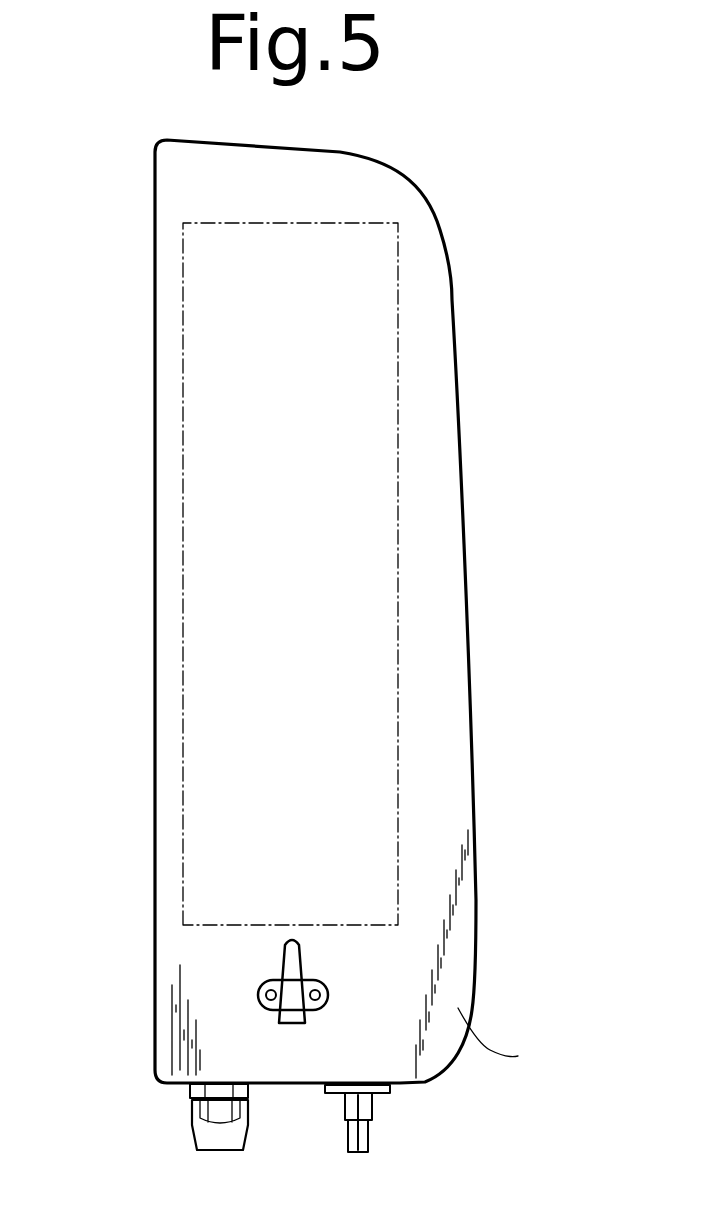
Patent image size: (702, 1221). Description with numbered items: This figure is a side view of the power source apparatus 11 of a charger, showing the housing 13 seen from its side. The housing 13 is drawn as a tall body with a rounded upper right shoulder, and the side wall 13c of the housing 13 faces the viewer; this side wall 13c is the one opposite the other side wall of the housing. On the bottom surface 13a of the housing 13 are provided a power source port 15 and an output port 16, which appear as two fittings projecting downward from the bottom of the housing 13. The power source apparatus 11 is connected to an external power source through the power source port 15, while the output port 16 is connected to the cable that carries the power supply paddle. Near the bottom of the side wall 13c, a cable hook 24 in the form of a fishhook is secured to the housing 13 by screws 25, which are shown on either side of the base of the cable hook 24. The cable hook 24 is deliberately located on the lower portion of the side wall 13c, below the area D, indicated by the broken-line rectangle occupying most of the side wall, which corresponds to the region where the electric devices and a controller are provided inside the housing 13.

The power source apparatus 11 is at (462, 203).
The housing 13 is at (476, 910).
The bottom surface 13a is at (176, 1085).
The side wall 13c is at (505, 1052).
The area for the electric devices and a controller D is at (183, 675).
The cable hook 24 is at (290, 960).
The screws 25 is at (268, 1010).
The power source port 15 is at (205, 1140).
The output port 16 is at (358, 1135).